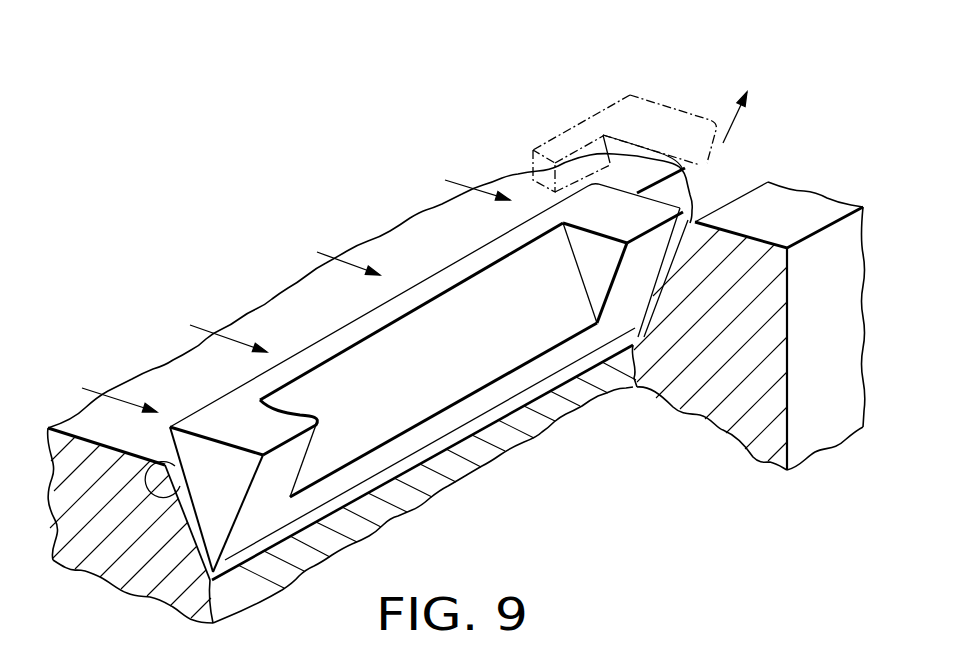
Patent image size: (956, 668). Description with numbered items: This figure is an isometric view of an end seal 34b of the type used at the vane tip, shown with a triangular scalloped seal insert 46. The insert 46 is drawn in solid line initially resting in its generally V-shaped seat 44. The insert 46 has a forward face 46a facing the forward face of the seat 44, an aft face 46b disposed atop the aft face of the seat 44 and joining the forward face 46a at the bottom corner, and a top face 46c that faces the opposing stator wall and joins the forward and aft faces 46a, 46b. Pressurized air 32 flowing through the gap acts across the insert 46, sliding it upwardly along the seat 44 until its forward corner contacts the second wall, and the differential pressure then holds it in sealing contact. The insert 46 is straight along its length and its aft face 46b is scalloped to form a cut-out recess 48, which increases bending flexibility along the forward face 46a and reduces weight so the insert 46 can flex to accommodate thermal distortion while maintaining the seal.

The pressurized air 32 is at (327, 250).
The seat 44 is at (730, 182).
The triangular insert 46 is at (310, 343).
The forward face 46a is at (165, 462).
The aft face 46b is at (287, 477).
The top face 46c is at (222, 413).
The cut-out recess 48 is at (498, 338).
The triangular static seal 34b is at (813, 120).